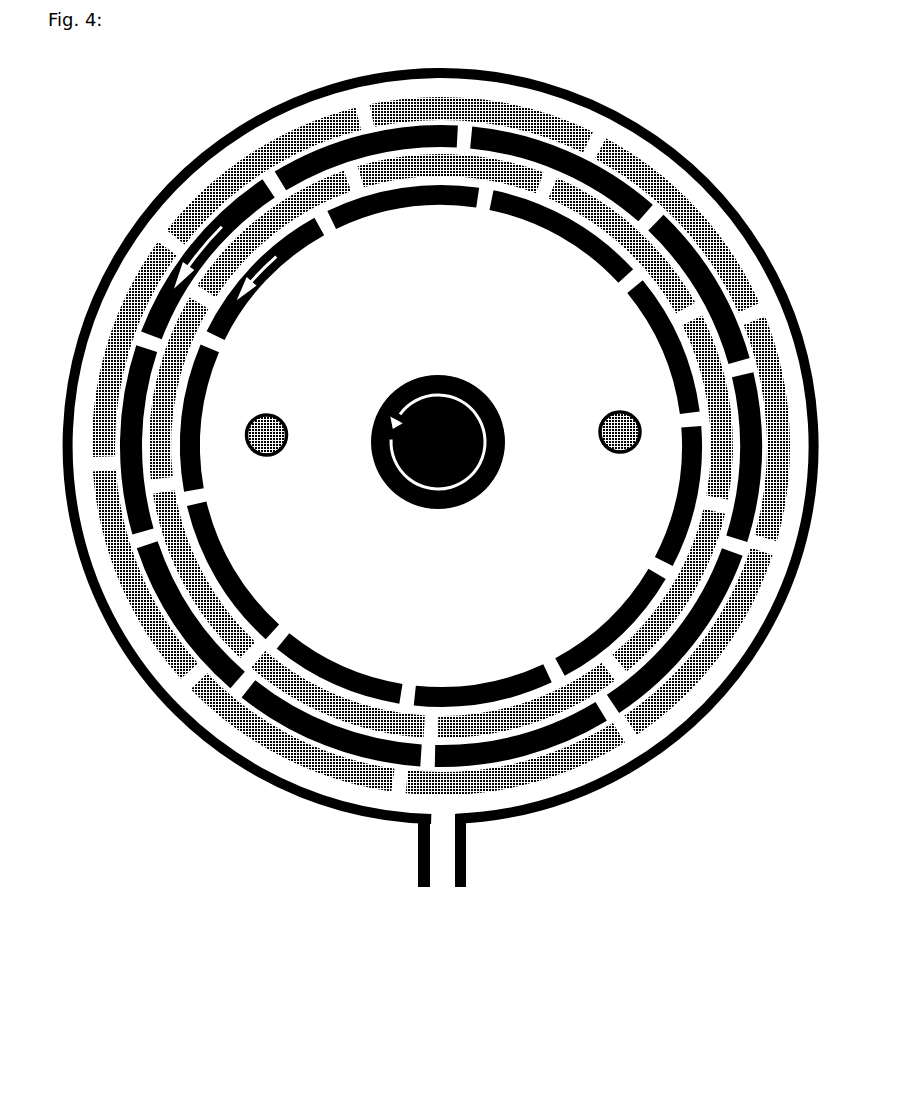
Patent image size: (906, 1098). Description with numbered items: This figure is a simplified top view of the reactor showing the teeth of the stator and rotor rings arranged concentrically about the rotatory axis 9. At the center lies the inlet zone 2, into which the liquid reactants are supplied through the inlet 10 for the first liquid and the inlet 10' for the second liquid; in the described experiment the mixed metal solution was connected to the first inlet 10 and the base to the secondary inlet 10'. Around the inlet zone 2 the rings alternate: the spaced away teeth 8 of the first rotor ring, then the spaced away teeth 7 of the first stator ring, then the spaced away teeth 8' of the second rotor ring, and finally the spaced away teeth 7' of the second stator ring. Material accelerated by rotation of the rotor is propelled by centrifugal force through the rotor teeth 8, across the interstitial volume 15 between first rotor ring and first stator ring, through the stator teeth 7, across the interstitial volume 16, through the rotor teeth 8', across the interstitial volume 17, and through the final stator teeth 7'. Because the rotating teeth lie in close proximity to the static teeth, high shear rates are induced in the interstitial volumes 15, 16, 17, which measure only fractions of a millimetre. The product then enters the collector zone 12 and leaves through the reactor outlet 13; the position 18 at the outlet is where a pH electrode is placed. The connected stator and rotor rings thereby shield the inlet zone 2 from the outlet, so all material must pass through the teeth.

The inlet zone 2 is at (300, 568).
The spaced away teeth of first (inner) stator ring 7 is at (441, 493).
The spaced away teeth of second stator ring 7' is at (441, 476).
The spaced away teeth of first (interior) rotor ring 8 is at (441, 446).
The spaced away teeth of second rotor ring 8' is at (435, 448).
The rotatory axis 9 is at (438, 362).
The inlet for first liquid reactant 10 is at (280, 409).
The inlet for second liquid reactant 10' is at (608, 408).
The collector zone 12 is at (786, 315).
The reactor outlet 13 is at (458, 876).
The interstitial volume between first rotor ring and first stator ring 15 is at (557, 678).
The interstitial volume between first stator ring and second rotor ring 16 is at (727, 489).
The interstitial volume between second rotor ring and second stator ring 17 is at (308, 142).
The position for placing pH electrode at reactor outlet 18 is at (423, 896).